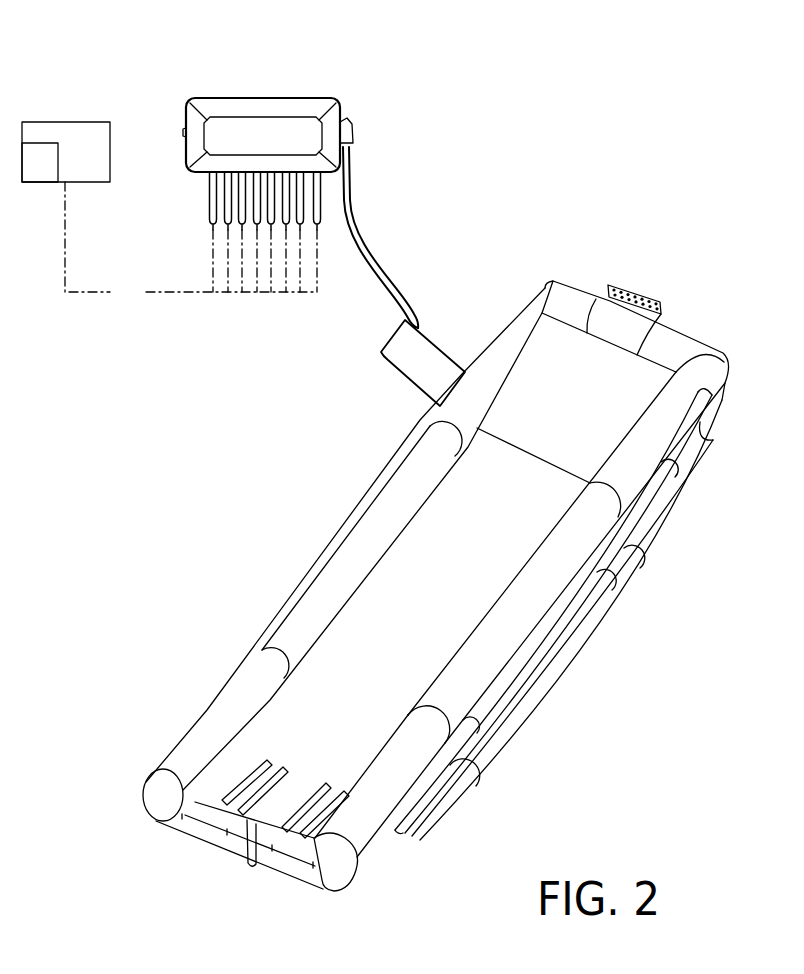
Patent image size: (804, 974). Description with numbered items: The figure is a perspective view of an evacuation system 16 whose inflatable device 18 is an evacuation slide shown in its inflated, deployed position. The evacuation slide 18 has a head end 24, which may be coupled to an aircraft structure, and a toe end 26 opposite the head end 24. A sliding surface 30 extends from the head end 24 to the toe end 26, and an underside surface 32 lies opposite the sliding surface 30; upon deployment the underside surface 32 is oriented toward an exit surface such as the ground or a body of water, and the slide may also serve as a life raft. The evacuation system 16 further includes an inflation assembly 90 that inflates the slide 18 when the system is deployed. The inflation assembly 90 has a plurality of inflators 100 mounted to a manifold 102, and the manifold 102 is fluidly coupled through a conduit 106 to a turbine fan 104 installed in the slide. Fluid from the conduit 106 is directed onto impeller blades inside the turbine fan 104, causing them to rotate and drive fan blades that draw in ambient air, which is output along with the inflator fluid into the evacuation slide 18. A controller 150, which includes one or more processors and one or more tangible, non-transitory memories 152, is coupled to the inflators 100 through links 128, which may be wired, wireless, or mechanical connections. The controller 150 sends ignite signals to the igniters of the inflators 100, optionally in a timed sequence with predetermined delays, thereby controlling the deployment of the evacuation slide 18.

The evacuation system 16 is at (578, 150).
The inflatable device 18 is at (557, 266).
The head end 24 is at (595, 294).
The toe end 26 is at (204, 845).
The sliding surface 30 is at (452, 583).
The underside surface 32 is at (515, 712).
The inflation assembly 90 is at (394, 167).
The inflators 100 is at (227, 180).
The manifold 102 is at (227, 110).
The turbine fan 104 is at (420, 375).
The conduit 106 is at (367, 251).
The links 128 is at (191, 243).
The controller 150 is at (98, 166).
The memories 152 is at (53, 176).